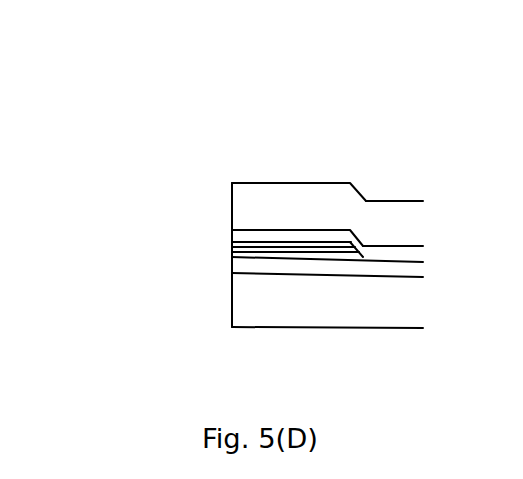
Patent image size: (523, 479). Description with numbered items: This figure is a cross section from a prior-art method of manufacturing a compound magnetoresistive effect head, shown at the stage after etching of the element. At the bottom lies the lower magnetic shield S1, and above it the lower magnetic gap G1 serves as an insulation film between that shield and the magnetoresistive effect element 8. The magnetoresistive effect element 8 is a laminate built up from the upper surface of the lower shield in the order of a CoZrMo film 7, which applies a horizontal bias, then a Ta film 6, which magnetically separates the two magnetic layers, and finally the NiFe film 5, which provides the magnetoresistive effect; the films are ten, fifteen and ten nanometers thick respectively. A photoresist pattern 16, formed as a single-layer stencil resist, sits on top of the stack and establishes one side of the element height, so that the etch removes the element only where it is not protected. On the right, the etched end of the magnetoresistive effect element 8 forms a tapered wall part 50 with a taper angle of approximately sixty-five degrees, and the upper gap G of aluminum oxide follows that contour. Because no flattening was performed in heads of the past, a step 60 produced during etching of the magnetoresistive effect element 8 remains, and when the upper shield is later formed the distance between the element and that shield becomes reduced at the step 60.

The photoresist pattern 16 is at (283, 183).
The step 60 is at (362, 240).
The wall part 50 is at (367, 240).
The upper magnetic gap G is at (232, 234).
The magnetoresistive effect element 8 is at (57, 200).
The NiFe film 5 is at (232, 241).
The Ta film 6 is at (232, 247).
The CoZrMo film 7 is at (232, 253).
The lower magnetic gap G1 is at (288, 266).
The lower magnetic shield S1 is at (382, 315).